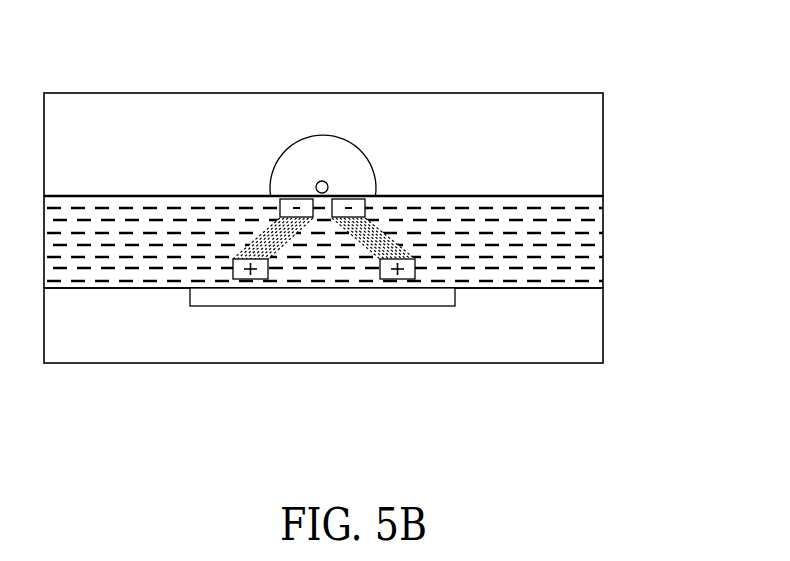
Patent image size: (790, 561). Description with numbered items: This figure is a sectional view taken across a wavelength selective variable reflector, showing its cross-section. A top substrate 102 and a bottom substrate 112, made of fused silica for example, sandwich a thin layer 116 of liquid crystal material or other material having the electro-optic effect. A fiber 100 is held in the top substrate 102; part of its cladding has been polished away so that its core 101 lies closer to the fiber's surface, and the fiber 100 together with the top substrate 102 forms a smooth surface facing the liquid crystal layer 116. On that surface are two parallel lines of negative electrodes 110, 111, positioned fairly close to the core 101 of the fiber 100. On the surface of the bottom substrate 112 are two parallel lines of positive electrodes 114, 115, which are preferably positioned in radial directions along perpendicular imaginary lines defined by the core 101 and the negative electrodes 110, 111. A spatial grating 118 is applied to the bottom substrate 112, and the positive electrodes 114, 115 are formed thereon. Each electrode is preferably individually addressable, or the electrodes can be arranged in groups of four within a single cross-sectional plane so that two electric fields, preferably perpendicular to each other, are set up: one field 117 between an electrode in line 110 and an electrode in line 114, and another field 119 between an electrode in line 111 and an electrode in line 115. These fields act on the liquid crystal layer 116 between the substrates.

The fiber 100 is at (322, 135).
The core 101 is at (328, 184).
The top substrate 102 is at (603, 127).
The negative electrodes 110 is at (288, 199).
The negative electrodes 111 is at (352, 199).
The bottom substrate 112 is at (603, 329).
The positive electrodes 114 is at (262, 280).
The positive electrodes 115 is at (395, 280).
The layer of liquid crystal material 116 is at (603, 249).
The field 117 is at (266, 235).
The spatial grating 118 is at (438, 307).
The field 119 is at (384, 242).